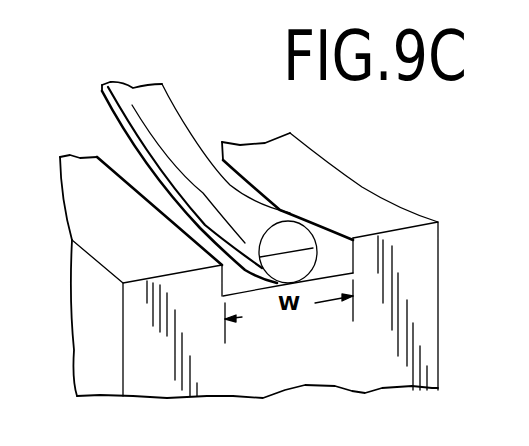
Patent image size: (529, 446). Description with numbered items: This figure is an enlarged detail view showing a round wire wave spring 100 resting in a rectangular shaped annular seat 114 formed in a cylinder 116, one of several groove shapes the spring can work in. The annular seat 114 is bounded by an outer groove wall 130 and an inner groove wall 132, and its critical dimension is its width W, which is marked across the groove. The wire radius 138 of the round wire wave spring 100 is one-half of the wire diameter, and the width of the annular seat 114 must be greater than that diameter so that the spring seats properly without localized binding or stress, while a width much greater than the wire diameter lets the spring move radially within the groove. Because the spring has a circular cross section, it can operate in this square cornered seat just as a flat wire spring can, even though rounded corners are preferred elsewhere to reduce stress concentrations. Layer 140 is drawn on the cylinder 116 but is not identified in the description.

The round wire wave spring 100 is at (188, 122).
The wire radius 138 is at (293, 248).
The outer groove wall 130 is at (222, 282).
The lower layer of left block 140 is at (222, 296).
The inner groove wall 132 is at (353, 255).
The annular seat 114 is at (353, 273).
The cylinder 116 is at (438, 358).